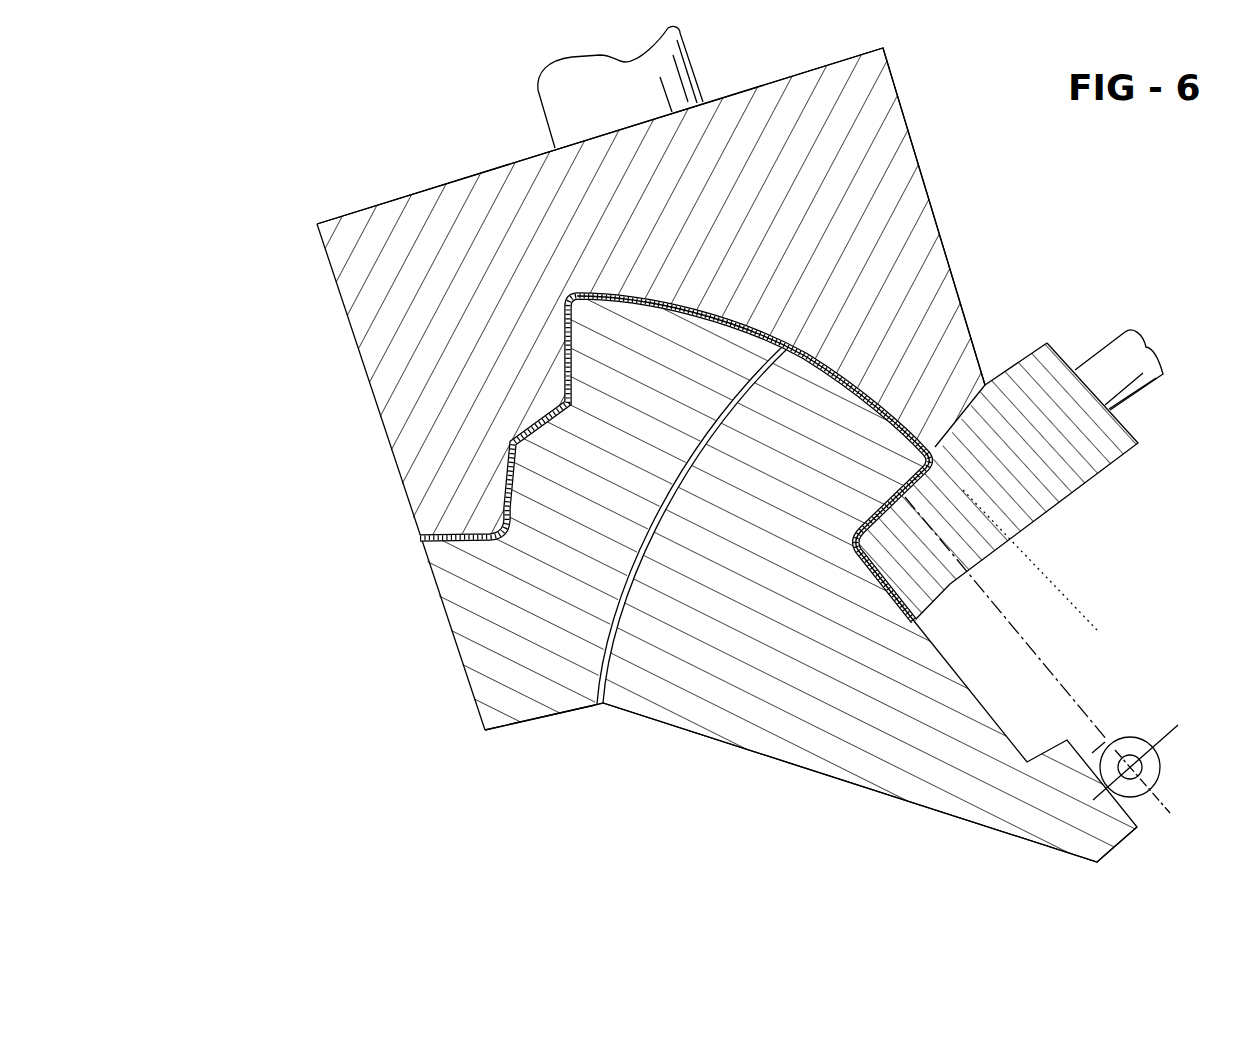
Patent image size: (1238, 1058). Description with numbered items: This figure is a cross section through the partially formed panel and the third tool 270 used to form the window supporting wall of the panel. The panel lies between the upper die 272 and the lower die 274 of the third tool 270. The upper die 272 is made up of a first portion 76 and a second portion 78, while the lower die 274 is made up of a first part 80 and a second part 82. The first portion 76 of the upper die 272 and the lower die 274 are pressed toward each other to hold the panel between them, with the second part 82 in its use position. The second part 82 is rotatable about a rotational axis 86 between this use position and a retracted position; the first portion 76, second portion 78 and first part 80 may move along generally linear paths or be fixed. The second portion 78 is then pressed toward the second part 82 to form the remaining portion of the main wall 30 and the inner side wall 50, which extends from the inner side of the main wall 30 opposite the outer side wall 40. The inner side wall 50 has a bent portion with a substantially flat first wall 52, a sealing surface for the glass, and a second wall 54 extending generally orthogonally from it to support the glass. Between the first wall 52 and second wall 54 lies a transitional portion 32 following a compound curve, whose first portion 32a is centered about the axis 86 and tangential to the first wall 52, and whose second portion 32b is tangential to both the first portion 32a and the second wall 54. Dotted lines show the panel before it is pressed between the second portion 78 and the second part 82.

The third tool 270 is at (494, 134).
The upper die 272 is at (308, 312).
The lower die 274 is at (446, 649).
The first portion 76 is at (805, 82).
The first part 80 is at (523, 657).
The second part 82 is at (738, 695).
The outer side wall 40 is at (520, 432).
The main wall 30 is at (858, 362).
The inner side wall 50 is at (985, 395).
The second portion 78 is at (1115, 452).
The first wall 52 is at (920, 470).
The first portion 32a is at (878, 510).
The second portion 32b is at (862, 568).
The second wall 54 is at (868, 570).
The transitional portion 32 is at (920, 600).
The rotational axis 86 is at (1131, 765).